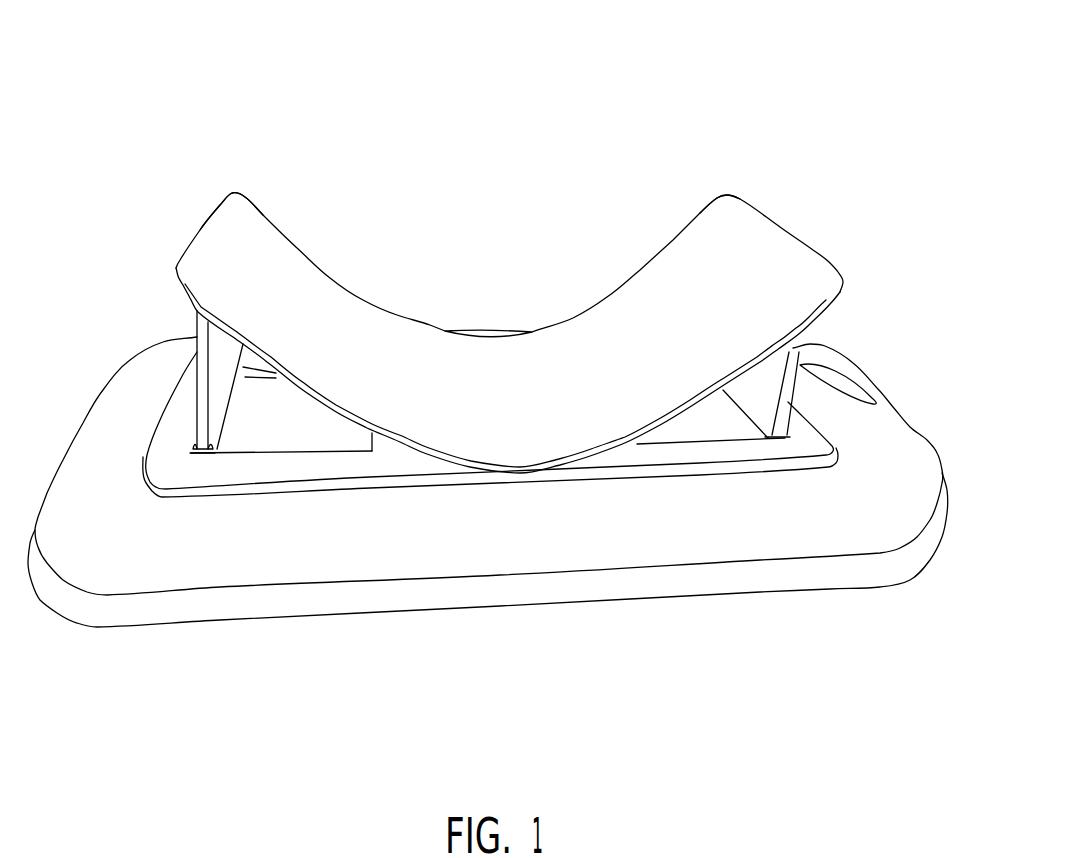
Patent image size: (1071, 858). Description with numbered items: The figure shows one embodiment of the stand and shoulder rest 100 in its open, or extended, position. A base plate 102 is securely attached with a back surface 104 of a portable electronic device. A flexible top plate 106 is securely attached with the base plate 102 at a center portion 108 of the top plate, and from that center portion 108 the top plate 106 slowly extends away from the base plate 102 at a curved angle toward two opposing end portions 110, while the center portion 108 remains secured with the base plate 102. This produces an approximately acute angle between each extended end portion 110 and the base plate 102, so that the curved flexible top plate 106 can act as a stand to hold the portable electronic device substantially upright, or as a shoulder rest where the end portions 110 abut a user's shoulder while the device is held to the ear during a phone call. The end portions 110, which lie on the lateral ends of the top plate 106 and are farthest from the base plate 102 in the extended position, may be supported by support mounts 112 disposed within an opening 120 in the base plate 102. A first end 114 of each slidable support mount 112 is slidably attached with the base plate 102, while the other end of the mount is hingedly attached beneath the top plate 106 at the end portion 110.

The stand and shoulder rest 100 is at (594, 94).
The base plate 102 is at (163, 452).
The back surface 104 is at (735, 535).
The flexible top plate 106 is at (340, 367).
The center portion 108 is at (483, 367).
The end portions 110 is at (222, 213).
The support mounts 112 is at (215, 368).
The first end 114 is at (209, 445).
The opening 120 is at (309, 430).